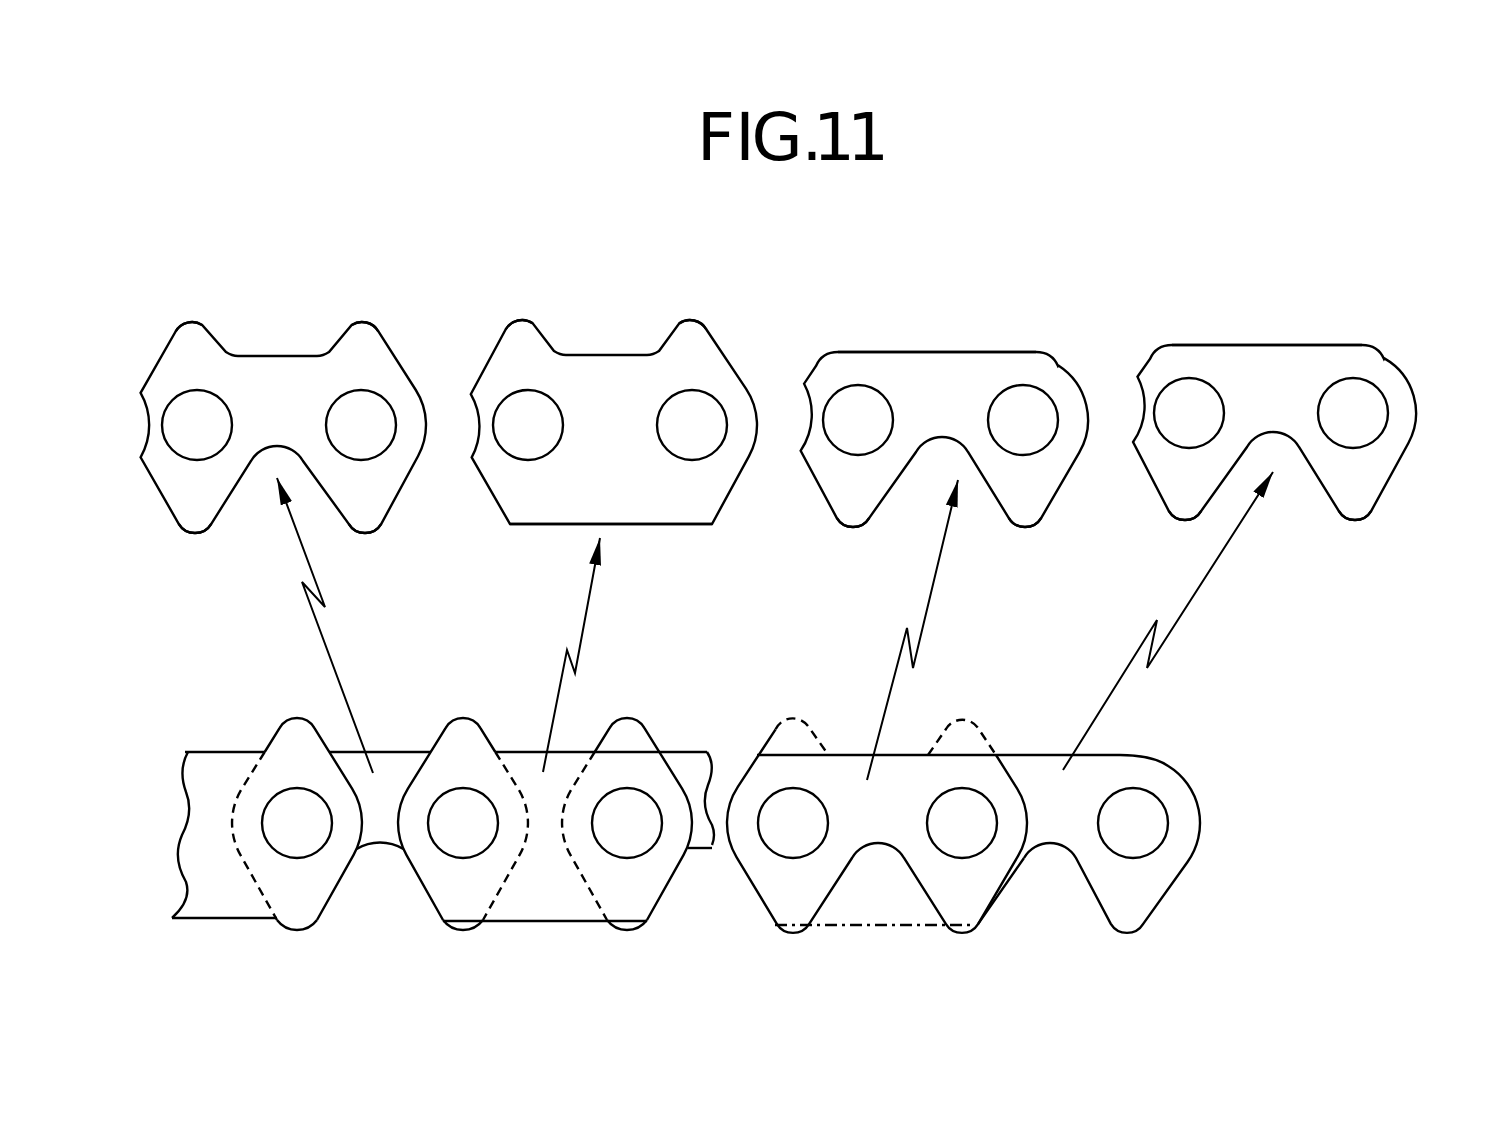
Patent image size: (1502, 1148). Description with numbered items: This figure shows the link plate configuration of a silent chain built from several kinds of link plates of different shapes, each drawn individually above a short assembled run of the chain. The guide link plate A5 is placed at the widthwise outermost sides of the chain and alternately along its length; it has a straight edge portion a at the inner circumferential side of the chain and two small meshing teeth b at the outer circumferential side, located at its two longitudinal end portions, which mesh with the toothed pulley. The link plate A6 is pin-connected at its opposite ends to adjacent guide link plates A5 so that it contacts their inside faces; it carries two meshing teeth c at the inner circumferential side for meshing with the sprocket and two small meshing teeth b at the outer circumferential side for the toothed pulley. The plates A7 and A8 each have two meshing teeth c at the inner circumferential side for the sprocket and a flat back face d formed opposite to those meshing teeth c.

The guide link plate A5 is at (608, 356).
The link plate A6 is at (272, 357).
The plate A7 is at (1003, 357).
The plate A8 is at (1390, 455).
The straight edge portion a is at (670, 525).
The small meshing teeth b is at (193, 338).
The meshing teeth c is at (198, 527).
The flat back face d is at (935, 352).